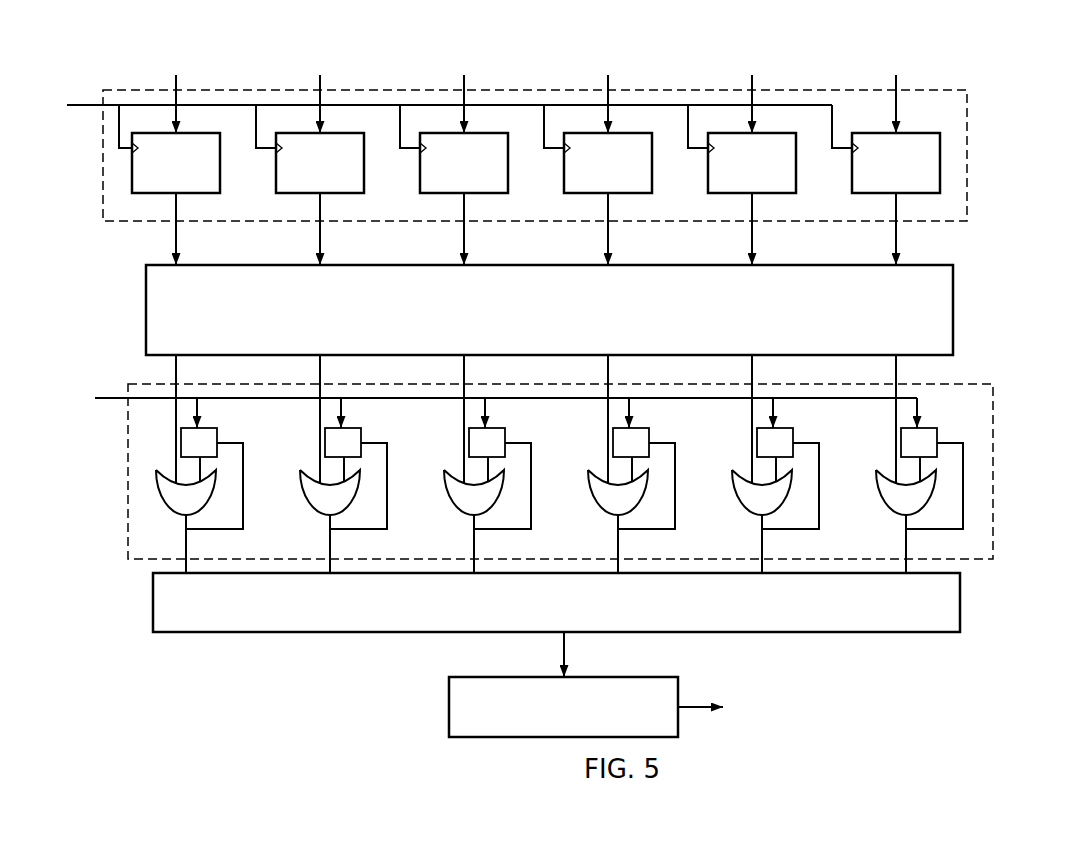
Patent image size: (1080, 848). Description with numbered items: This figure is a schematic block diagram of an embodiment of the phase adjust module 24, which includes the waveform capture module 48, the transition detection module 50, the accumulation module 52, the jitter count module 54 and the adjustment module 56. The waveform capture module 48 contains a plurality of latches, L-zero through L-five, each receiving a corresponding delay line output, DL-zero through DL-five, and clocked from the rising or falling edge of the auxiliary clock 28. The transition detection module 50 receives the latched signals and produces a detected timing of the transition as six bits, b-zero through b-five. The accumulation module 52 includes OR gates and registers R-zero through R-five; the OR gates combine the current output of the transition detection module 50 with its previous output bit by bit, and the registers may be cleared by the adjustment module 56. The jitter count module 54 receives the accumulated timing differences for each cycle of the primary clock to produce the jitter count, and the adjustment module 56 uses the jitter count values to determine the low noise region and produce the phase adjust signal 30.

The phase adjust module 24 is at (561, 421).
The auxiliary clock 28 is at (450, 107).
The phase adjust signal 30 is at (743, 707).
The waveform capture module 48 is at (591, 160).
The transition detection module 50 is at (549, 310).
The accumulation module 52 is at (600, 534).
The jitter count module 54 is at (556, 602).
The adjustment module 56 is at (563, 707).